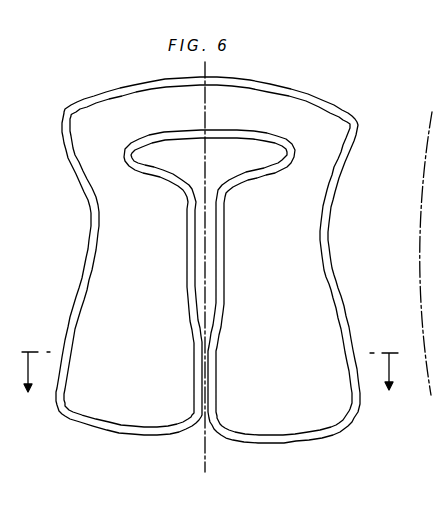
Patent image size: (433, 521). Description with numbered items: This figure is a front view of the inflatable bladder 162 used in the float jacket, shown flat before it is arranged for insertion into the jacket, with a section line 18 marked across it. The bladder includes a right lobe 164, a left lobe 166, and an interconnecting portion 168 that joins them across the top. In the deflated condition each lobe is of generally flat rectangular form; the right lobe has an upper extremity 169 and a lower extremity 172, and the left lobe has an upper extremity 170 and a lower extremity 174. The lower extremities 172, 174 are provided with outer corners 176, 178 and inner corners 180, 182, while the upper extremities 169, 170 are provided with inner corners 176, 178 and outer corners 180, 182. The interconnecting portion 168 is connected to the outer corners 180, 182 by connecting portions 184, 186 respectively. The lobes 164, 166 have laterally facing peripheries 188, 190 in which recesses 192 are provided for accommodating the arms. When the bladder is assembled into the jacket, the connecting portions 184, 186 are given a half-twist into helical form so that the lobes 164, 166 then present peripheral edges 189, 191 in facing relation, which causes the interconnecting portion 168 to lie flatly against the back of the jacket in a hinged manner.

The section line 18- 18 is at (213, 388).
The garment vest 162 is at (361, 304).
The right lobe 164 is at (97, 253).
The left lobe 166 is at (338, 250).
The interconnecting portion 168 is at (262, 103).
The upper extremity 169 is at (120, 222).
The upper extremity 170 is at (332, 195).
The lower extremity 172 is at (138, 418).
The lower extremity 174 is at (298, 428).
The corner 176 is at (188, 183).
The corner 178 is at (223, 185).
The corner 180 is at (59, 108).
The corner 182 is at (358, 122).
The connecting portion 184 is at (83, 133).
The connecting portion 186 is at (360, 134).
The laterally facing periphery 188 is at (187, 290).
The peripheral edge 189 is at (68, 293).
The laterally facing periphery 190 is at (232, 260).
The peripheral edge 191 is at (370, 387).
The recess 192 is at (218, 228).